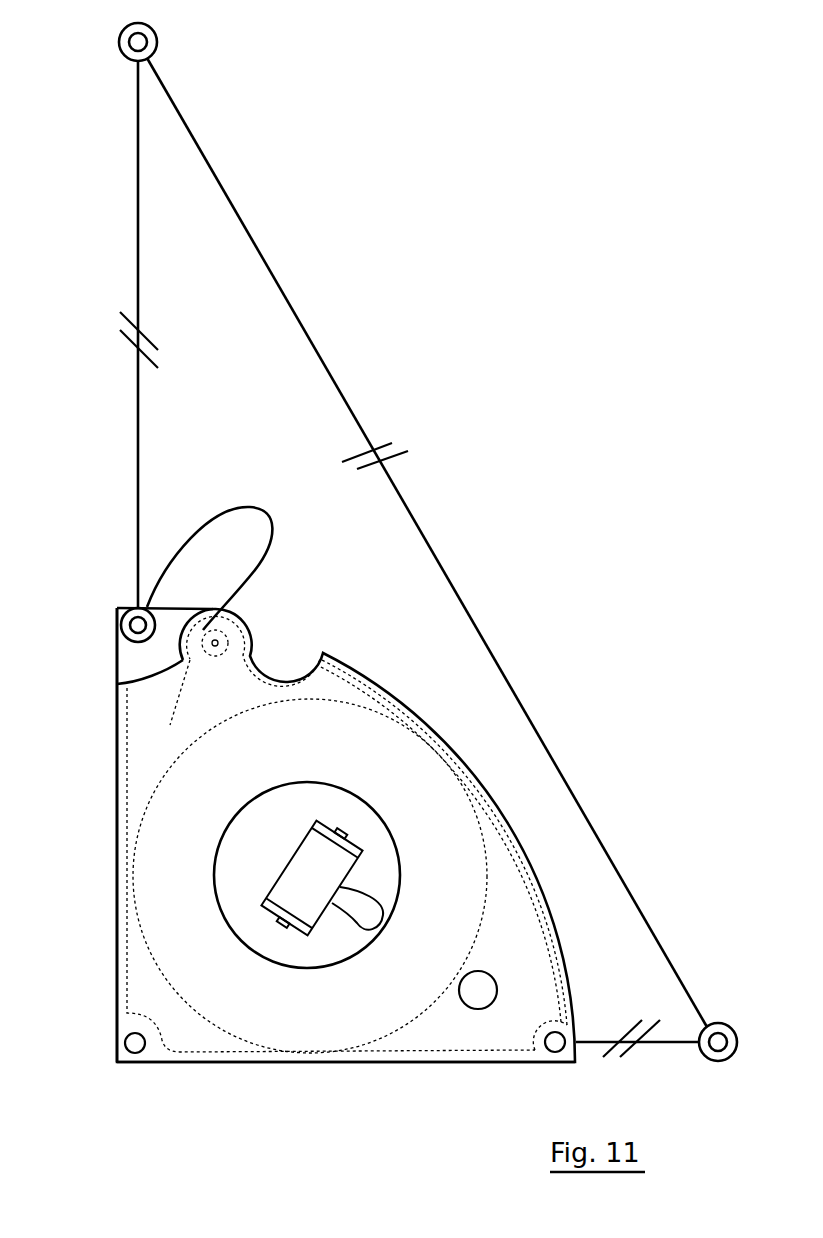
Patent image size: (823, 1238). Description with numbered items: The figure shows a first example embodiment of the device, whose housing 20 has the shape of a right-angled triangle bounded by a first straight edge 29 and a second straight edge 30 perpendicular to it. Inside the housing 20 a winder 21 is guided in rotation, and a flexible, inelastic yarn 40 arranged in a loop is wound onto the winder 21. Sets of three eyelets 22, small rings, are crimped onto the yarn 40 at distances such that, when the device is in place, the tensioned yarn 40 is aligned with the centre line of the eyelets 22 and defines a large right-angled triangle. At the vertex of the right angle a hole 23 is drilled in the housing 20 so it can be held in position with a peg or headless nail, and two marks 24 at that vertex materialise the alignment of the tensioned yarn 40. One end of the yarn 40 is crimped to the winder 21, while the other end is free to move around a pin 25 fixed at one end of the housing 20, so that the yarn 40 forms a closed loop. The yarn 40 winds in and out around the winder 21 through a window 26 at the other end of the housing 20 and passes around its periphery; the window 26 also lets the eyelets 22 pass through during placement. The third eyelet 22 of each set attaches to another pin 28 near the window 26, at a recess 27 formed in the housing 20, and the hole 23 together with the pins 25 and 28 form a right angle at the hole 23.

The housing 20 is at (407, 668).
The winder 21 is at (427, 803).
The eyelets 22 is at (158, 41).
The hole 23 is at (147, 1043).
The marks 24 is at (135, 1053).
The pin 25 is at (560, 1063).
The window 26 is at (112, 673).
The recess 27 is at (174, 630).
The pin 28 is at (120, 611).
The first straight edge 29 is at (395, 1063).
The second straight edge 30 is at (116, 937).
The yarn 40 is at (503, 651).